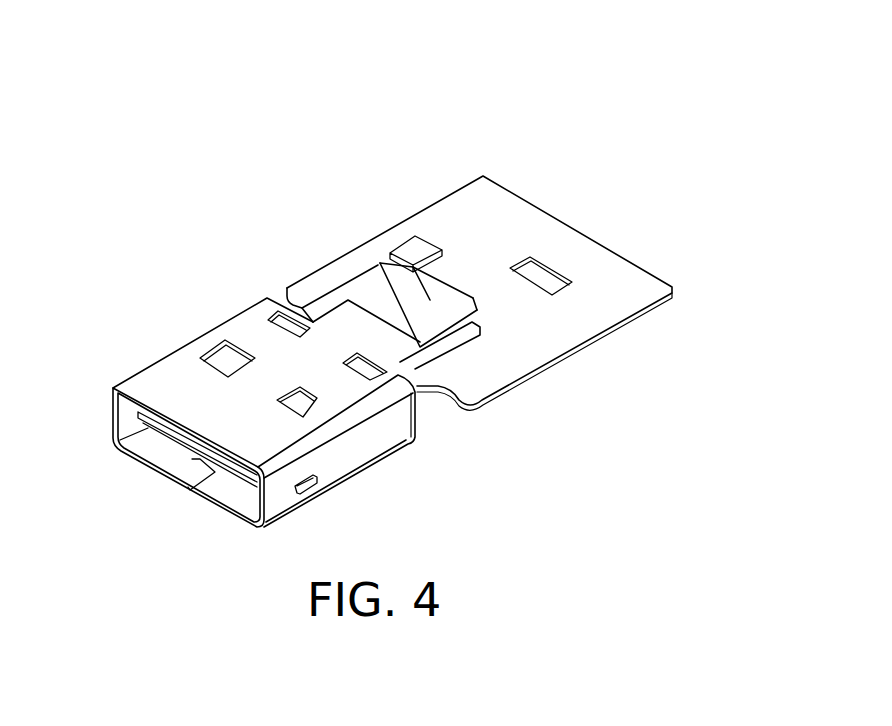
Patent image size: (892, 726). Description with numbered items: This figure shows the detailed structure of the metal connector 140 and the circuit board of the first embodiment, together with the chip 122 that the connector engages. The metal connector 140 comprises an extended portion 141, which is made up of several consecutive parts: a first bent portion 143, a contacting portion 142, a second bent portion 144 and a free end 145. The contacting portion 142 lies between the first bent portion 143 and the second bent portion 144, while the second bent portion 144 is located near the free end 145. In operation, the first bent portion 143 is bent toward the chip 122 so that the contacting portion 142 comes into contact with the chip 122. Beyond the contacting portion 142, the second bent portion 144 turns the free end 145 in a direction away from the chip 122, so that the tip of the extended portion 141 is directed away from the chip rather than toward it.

The metal connector 140 is at (175, 367).
The chip 122 is at (450, 335).
The extended portion 141 is at (513, 92).
The first bent portion 143 is at (382, 268).
The contacting portion 142 is at (410, 318).
The free end 145 is at (450, 312).
The second bent portion 144 is at (453, 270).